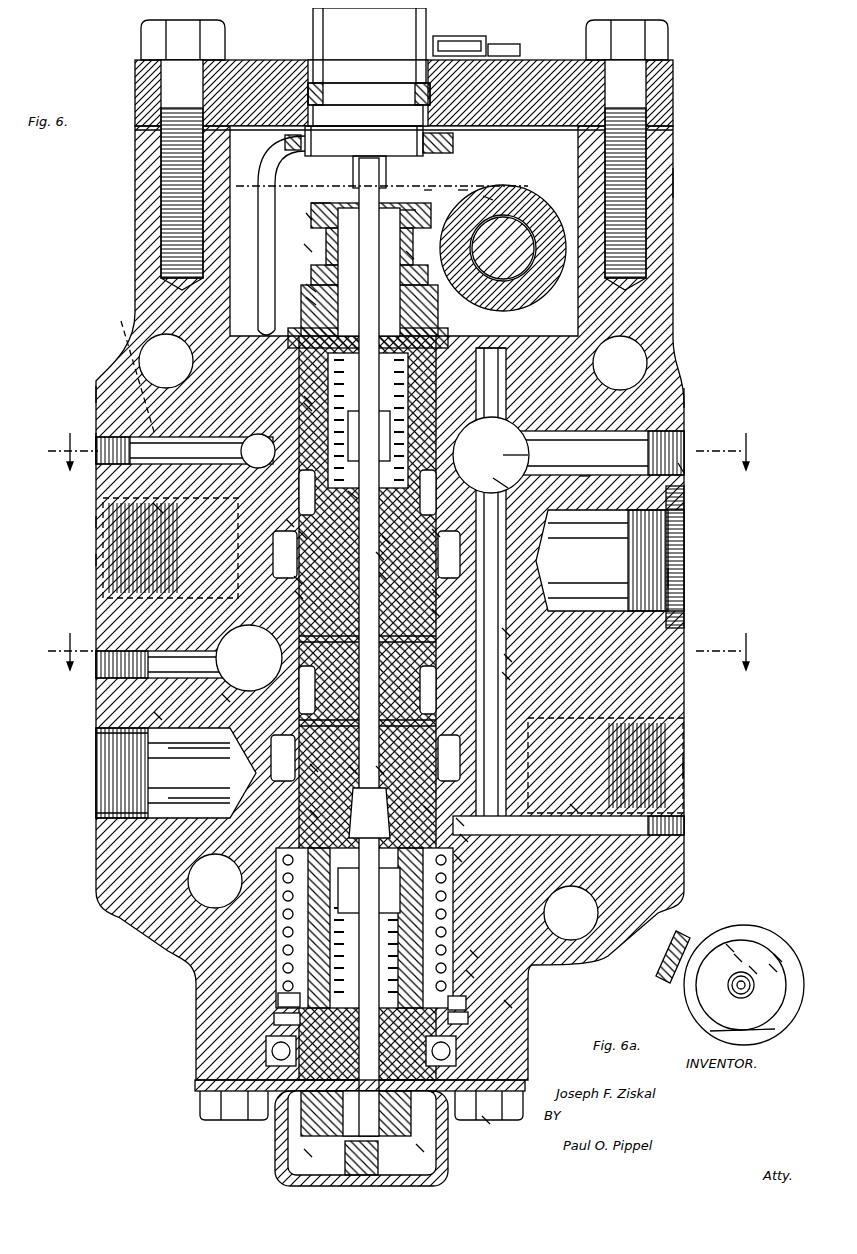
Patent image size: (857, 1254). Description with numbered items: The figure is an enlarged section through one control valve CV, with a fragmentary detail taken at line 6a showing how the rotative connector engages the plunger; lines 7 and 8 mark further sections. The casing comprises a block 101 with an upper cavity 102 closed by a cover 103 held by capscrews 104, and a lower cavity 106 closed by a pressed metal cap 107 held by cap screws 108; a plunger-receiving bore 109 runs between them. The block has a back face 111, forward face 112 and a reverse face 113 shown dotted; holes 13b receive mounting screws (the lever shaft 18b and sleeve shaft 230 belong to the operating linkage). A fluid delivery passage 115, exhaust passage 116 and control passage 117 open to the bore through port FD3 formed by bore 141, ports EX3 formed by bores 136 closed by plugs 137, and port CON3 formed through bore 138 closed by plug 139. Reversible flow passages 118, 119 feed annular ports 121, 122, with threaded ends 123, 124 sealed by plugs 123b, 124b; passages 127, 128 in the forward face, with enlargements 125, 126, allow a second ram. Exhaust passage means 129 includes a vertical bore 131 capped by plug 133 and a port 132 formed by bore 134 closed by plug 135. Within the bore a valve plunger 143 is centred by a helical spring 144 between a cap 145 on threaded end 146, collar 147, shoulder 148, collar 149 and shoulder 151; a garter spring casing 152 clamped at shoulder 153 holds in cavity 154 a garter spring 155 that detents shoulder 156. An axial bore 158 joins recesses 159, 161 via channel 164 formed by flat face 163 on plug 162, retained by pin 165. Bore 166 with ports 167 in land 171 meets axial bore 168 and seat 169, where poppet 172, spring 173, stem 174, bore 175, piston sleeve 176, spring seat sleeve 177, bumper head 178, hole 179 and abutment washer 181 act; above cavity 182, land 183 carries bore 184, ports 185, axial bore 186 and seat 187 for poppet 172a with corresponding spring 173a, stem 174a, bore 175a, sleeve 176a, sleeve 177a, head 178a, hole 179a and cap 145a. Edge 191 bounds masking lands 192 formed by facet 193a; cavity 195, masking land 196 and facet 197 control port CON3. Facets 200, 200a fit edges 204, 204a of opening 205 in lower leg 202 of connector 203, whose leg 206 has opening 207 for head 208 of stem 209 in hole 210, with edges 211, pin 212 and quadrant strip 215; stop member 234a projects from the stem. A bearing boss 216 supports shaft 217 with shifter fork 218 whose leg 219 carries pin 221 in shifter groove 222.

In FIG. 6, the block 101 is at (672, 345).
In FIG. 6, the cavity 102 is at (555, 143).
In FIG. 6, the cover 103 is at (665, 85).
In FIG. 6, the capscrews 104 is at (133, 22).
In FIG. 6, the second cavity 106 is at (450, 910).
In FIG. 6, the pressed metal cap 107 is at (267, 1165).
In FIG. 6, the cap screws 108 is at (215, 1112).
In FIG. 6, the plunger-receiving bore 109 is at (300, 392).
In FIG. 6, the back face 111 is at (88, 380).
In FIG. 6, the forward face 112 is at (678, 390).
In FIG. 6, the reverse face 113 is at (680, 505).
In FIG. 6, the fluid delivery passage 115 is at (218, 690).
In FIG. 6, the exhaust passage 116 is at (498, 420).
In FIG. 6, the control passage 117 is at (240, 448).
In FIG. 6, the reversible flow passage 118 is at (230, 542).
In FIG. 6, the reversible flow passage 119 is at (225, 772).
In FIG. 6, the annular reversible flow port 121 is at (282, 515).
In FIG. 6, the annular reversible flow port 122 is at (275, 727).
In FIG. 6, the threaded enlarged outer end 123 is at (90, 514).
In FIG. 6, the plug 123b is at (90, 552).
In FIG. 6, the threaded enlarged outer end 124 is at (88, 778).
In FIG. 6, the plug 124b is at (88, 750).
In FIG. 6, the bore 125 is at (670, 570).
In FIG. 6, the passage 126 is at (675, 760).
In FIG. 6, the reversible flow passage 127 is at (540, 535).
In FIG. 6, the reversible flow passage 128 is at (515, 705).
In FIG. 6, the exhaust passage means 129 is at (570, 455).
In FIG. 6, the vertical bore 131 is at (498, 624).
In FIG. 6, the port 132 is at (456, 830).
In FIG. 6, the plug 133 is at (500, 343).
In FIG. 6, the bore 134 is at (566, 800).
In FIG. 6, the plug 135 is at (678, 822).
In FIG. 6, the bore 136 is at (577, 468).
In FIG. 6, the plug 137 is at (676, 462).
In FIG. 6, the bore 138 is at (150, 500).
In FIG. 6, the plug 139 is at (88, 430).
In FIG. 6, the bore 141 is at (150, 708).
In FIG. 6, the valve plunger 143 is at (491, 477).
In FIG. 6A, the valve plunger 143 is at (690, 997).
In FIG. 6, the helical spring 144 is at (466, 946).
In FIG. 6, the cap 145 is at (412, 1140).
In FIG. 6A, the cap 145a is at (730, 950).
In FIG. 6, the threaded lower end portion 146 is at (330, 890).
In FIG. 6, the spring seat collar 147 is at (462, 966).
In FIG. 6, the shoulder 148 is at (452, 814).
In FIG. 6, the spring seat collar 149 is at (450, 850).
In FIG. 6, the shoulder 151 is at (215, 881).
In FIG. 6, the garter spring casing 152 is at (458, 992).
In FIG. 6, the shoulder 153 is at (460, 1010).
In FIG. 6, the annular cavity 154 is at (478, 1112).
In FIG. 6, the garter spring 155 is at (450, 1042).
In FIG. 6, the detent shoulder 156 is at (500, 996).
In FIG. 6, the central axial bore 158 is at (292, 545).
In FIG. 6, the recess 159 is at (306, 806).
In FIG. 6, the recess 161 is at (295, 527).
In FIG. 6, the plug 162 is at (290, 572).
In FIG. 6, the flat face 163 is at (428, 605).
In FIG. 6, the channel 164 is at (428, 585).
In FIG. 6, the pin 165 is at (300, 625).
In FIG. 6, the diametric bore 166 is at (345, 762).
In FIG. 6, the end ports 167 is at (306, 760).
In FIG. 6, the axial bore 168 is at (372, 762).
In FIG. 6, the valve seat 169 is at (420, 802).
In FIG. 6, the cylindrical land 171 is at (452, 744).
In FIG. 6, the poppet valve member 172 is at (380, 815).
In FIG. 6, the poppet valve member 172a is at (345, 487).
In FIG. 6, the helical spring 173 is at (278, 895).
In FIG. 6, the helical spring 173a is at (335, 369).
In FIG. 6, the stem portion 174 is at (326, 925).
In FIG. 6, the stem portion 174a is at (326, 352).
In FIG. 6, the bore 175 is at (270, 990).
In FIG. 6, the bore 175a is at (312, 195).
In FIG. 6, the piston sleeve 176 is at (266, 1010).
In FIG. 6, the piston sleeve 176a is at (303, 280).
In FIG. 6, the spring seat sleeve 177 is at (260, 1042).
In FIG. 6, the spring seat sleeve 177a is at (303, 293).
In FIG. 6, the bumper head 178 is at (330, 1128).
In FIG. 6, the bumper head 178a is at (347, 175).
In FIG. 6A, the bumper head 178a is at (765, 960).
In FIG. 6, the hole 179 is at (300, 1145).
In FIG. 6, the hole 179a is at (400, 202).
In FIG. 6, the abutment washer 181 is at (285, 1100).
In FIG. 6, the annular cavity 182 is at (498, 668).
In FIG. 6, the cylindrical land 183 is at (428, 525).
In FIG. 6, the diametric bore 184 is at (375, 568).
In FIG. 6, the end ports 185 is at (266, 560).
In FIG. 6, the axial bore 186 is at (372, 548).
In FIG. 6, the valve seat 187 is at (378, 532).
In FIG. 6, the lower edge 191 is at (291, 587).
In FIG. 6, the fluid-delivery-port masking lands 192 is at (250, 650).
In FIG. 6, the facet 193a is at (500, 650).
In FIG. 6, the annular cavity 195 is at (502, 455).
In FIG. 6, the control-port-masking land 196 is at (340, 440).
In FIG. 6, the facet 197 is at (300, 399).
In FIG. 6A, the facet 200 is at (752, 1020).
In FIG. 6A, the facet 200a is at (745, 962).
In FIG. 6, the lower leg 202 is at (440, 320).
In FIG. 6A, the lower leg 202 is at (772, 1012).
In FIG. 6, the U-shaped connector 203 is at (250, 160).
In FIG. 6A, the U-shaped connector 203 is at (650, 965).
In FIG. 6A, the straight edge 204 is at (704, 1023).
In FIG. 6A, the straight edge 204a is at (722, 940).
In FIG. 6A, the elongated opening 205 is at (770, 950).
In FIG. 6, the leg 206 is at (445, 135).
In FIG. 6, the opening 207 is at (455, 182).
In FIG. 6, the head 208 is at (420, 182).
In FIG. 6, the stem 209 is at (385, 54).
In FIG. 6, the hole 210 is at (420, 100).
In FIG. 6, the straight edge portions 211 is at (368, 115).
In FIG. 6, the operating pin 212 is at (500, 36).
In FIG. 6, the quadrant strip 215 is at (452, 28).
In FIG. 6, the bearing boss 216 is at (548, 195).
In FIG. 6, the shaft 217 is at (503, 248).
In FIG. 6, the shifter fork 218 is at (480, 190).
In FIG. 6, the leg 219 is at (503, 248).
In FIG. 6, the pin 221 is at (402, 247).
In FIG. 6, the shifter groove 222 is at (300, 240).
In FIG. 6, the sleeve shaft 230 is at (337, 1155).
In FIG. 6, the stop member 234a is at (352, 148).
In FIG. 6, the bolt holes 13b is at (140, 345).
In FIG. 6, the tube 18b is at (300, 208).
In FIG. 6, the section line 6a is at (377, 187).
In FIG. 6, the section line 7 is at (403, 451).
In FIG. 6, the section line 8 is at (403, 651).
In FIG. 6, the control valve CV is at (668, 173).
In FIG. 6, the control port CON3 is at (262, 420).
In FIG. 6, the exhaust ports EX3 is at (491, 455).
In FIG. 6, the fluid delivery port FD3 is at (250, 658).